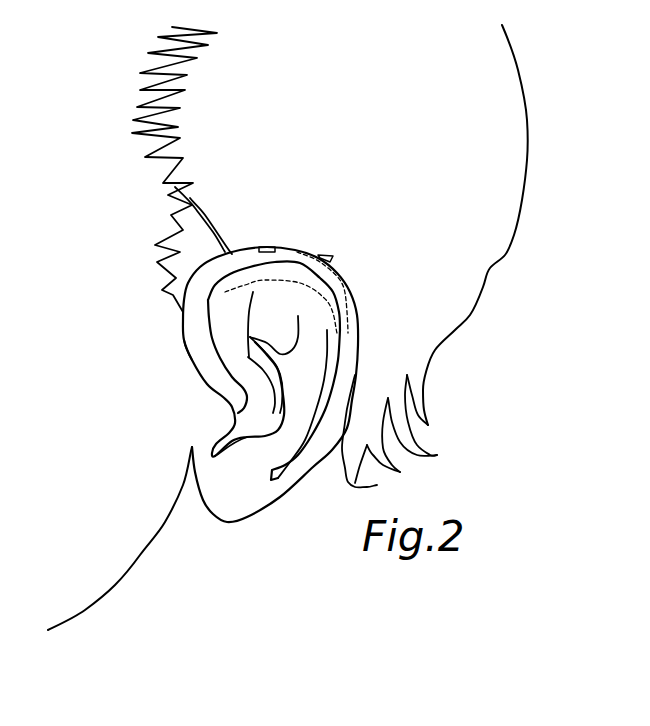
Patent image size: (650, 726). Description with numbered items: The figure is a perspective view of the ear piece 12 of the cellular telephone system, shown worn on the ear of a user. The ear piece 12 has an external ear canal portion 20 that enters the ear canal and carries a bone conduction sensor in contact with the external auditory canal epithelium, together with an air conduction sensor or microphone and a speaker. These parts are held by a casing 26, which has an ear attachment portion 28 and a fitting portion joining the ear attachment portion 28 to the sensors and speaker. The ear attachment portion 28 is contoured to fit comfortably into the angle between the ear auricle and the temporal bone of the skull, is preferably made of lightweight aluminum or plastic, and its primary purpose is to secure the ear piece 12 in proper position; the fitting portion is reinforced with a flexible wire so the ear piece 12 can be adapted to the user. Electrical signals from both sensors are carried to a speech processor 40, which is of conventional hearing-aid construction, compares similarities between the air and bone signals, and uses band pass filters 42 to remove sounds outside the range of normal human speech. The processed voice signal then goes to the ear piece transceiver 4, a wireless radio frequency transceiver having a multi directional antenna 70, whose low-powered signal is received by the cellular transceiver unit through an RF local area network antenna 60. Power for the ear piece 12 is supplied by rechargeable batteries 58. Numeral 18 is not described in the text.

The ear piece transceiver 4 is at (327, 277).
The ear piece 12 is at (186, 337).
The head 18 is at (355, 375).
The external ear canal portion 20 is at (228, 397).
The casing 26 is at (197, 358).
The ear attachment portion 28 is at (160, 238).
The speech processor 40 is at (167, 213).
The band pass filters 42 is at (162, 185).
The rechargeable batteries 58 is at (343, 310).
The RF local area network antenna 60 is at (265, 247).
The multi directional antenna 70 is at (320, 255).